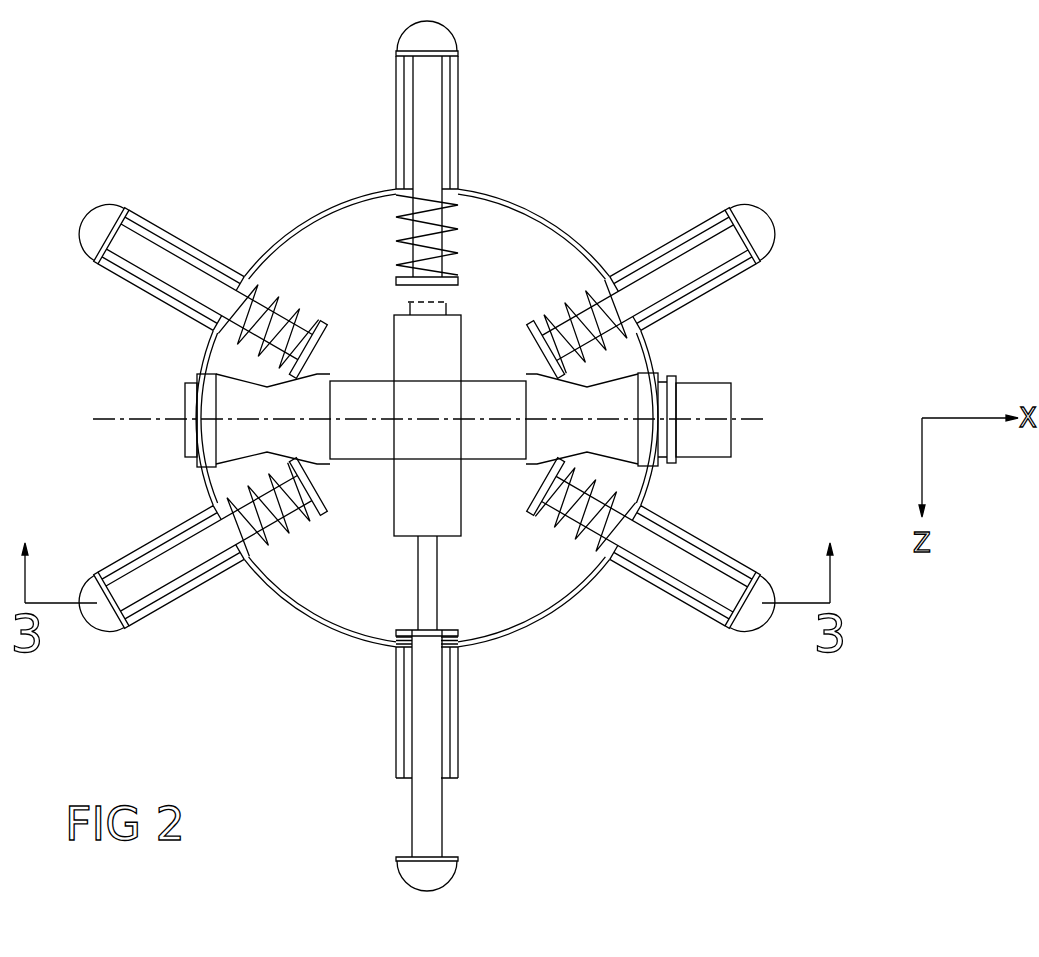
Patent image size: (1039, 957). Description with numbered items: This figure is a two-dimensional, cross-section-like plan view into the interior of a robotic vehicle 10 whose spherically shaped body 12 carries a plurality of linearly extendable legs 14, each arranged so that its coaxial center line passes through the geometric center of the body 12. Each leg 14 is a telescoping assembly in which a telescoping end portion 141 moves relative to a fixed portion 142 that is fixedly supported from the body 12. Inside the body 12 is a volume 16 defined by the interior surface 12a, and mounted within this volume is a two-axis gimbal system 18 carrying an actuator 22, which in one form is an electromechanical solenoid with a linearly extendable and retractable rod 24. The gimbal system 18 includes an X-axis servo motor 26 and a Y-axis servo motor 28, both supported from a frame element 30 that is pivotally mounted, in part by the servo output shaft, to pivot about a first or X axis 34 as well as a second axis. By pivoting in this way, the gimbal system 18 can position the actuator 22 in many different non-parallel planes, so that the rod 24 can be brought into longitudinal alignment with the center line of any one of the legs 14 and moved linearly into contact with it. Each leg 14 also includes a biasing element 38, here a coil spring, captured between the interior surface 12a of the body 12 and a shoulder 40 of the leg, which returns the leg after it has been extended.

The robotic vehicle 10 is at (414, 456).
The spherically shaped body 12 is at (270, 612).
The interior surface 12a is at (360, 632).
The linearly extendable leg 14 is at (423, 456).
The telescoping end portion 141 is at (100, 627).
The fixed portion 142 is at (143, 551).
The volume 16 is at (466, 607).
The two-axis gimbal system 18 is at (370, 364).
The actuator 22 is at (448, 512).
The rod 24 is at (424, 595).
The X-axis servo motor 26 is at (700, 385).
The Y-axis servo motor 28 is at (478, 393).
The frame element 30 is at (540, 452).
The X axis 34 is at (140, 418).
The biasing element 38 is at (396, 238).
The shoulder 40 is at (318, 490).